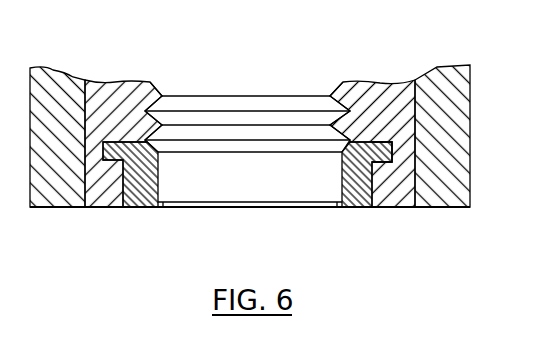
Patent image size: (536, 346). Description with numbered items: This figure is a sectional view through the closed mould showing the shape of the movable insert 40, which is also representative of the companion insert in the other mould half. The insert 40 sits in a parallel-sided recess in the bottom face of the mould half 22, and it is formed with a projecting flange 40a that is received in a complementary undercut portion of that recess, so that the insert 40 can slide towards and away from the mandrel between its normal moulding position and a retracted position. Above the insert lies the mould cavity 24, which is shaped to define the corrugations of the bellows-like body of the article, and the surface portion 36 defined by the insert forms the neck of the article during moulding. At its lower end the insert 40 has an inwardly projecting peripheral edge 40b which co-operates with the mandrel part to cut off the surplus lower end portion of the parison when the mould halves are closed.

The mould half 22 is at (389, 72).
The mould cavity 24 is at (171, 100).
The surface portion 36 is at (326, 188).
The movable insert 40 is at (183, 187).
The projecting flange 40a is at (380, 150).
The inwardly projecting peripheral edge 40b is at (275, 203).